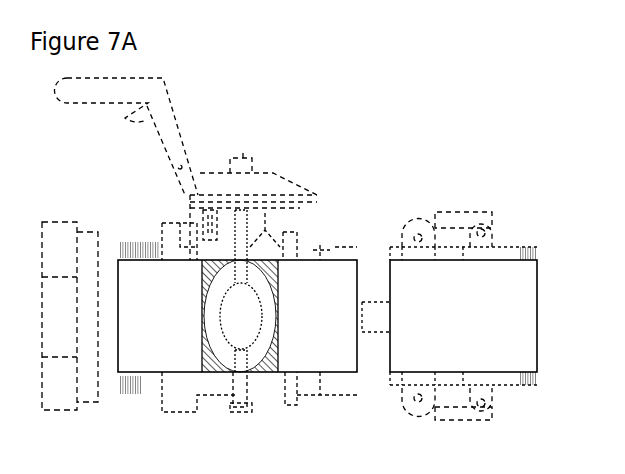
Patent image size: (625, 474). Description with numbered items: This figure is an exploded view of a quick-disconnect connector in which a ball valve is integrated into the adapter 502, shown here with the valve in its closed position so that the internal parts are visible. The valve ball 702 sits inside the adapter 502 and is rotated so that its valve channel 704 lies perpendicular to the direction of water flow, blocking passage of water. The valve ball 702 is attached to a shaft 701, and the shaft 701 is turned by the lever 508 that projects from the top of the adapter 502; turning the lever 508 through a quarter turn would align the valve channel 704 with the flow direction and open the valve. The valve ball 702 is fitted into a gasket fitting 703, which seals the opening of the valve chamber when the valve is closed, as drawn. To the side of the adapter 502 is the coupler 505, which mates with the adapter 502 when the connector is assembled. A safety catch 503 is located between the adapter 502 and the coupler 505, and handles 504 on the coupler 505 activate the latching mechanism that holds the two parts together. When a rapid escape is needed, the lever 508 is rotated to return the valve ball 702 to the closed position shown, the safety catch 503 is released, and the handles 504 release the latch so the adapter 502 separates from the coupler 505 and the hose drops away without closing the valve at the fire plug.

The lever 508 is at (182, 118).
The adapter 502 is at (320, 248).
The safety catch 503 is at (378, 323).
The handles 504 is at (465, 218).
The coupler 505 is at (505, 250).
The shaft 701 is at (240, 245).
The valve ball 702 is at (252, 352).
The gasket fitting 703 is at (203, 367).
The valve channel 704 is at (242, 325).